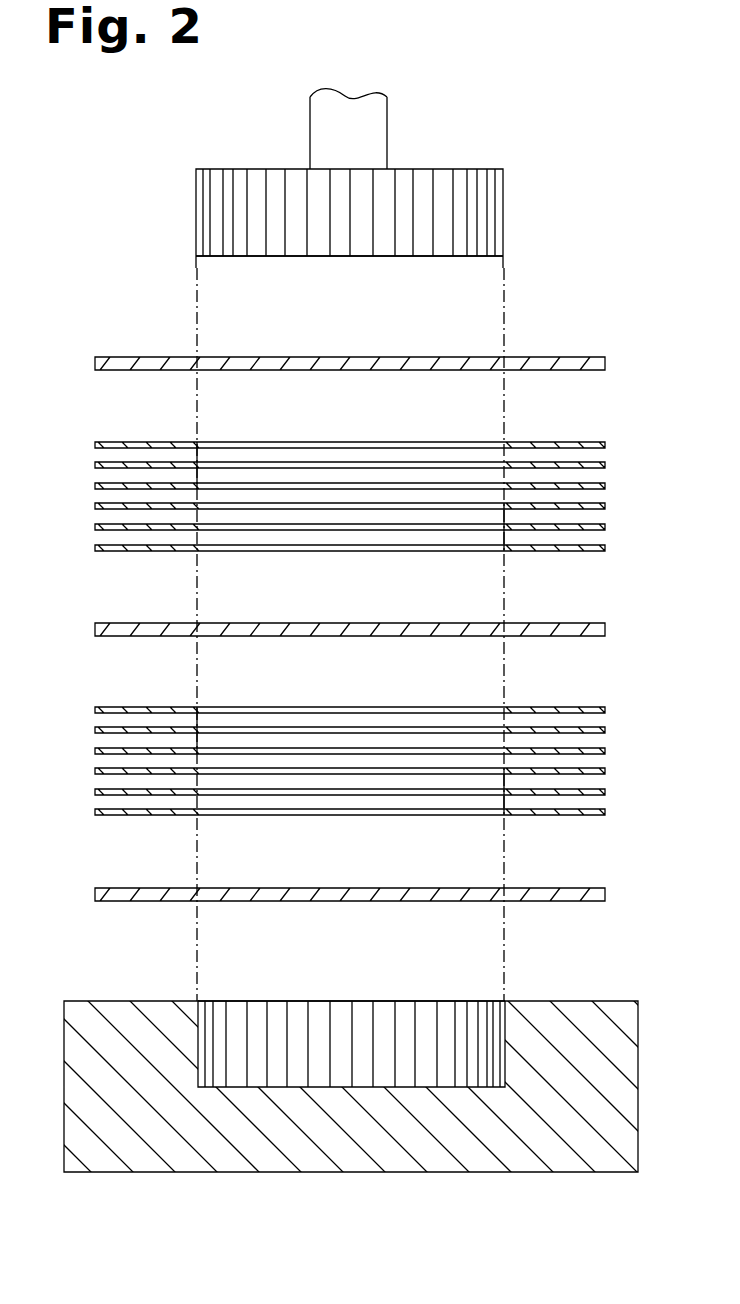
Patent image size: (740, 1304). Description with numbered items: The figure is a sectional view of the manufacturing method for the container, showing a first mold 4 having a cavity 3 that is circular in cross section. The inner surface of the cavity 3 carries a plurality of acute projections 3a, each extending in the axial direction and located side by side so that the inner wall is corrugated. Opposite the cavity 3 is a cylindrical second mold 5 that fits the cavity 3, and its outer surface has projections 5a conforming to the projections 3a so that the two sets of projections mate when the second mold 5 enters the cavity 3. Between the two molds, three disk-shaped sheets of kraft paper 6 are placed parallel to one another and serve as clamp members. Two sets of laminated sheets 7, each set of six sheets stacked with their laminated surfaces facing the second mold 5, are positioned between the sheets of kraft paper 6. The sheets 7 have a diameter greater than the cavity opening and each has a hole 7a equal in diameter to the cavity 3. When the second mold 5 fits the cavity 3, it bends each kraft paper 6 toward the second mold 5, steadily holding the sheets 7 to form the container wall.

The cavity 3 is at (208, 1008).
The acute projections 3a is at (335, 1001).
The first mold 4 is at (524, 1165).
The second mold 5 is at (504, 169).
The projections 5a is at (330, 256).
The kraft paper 6 is at (560, 357).
The sheets 7 is at (605, 445).
The hole 7a is at (197, 445).